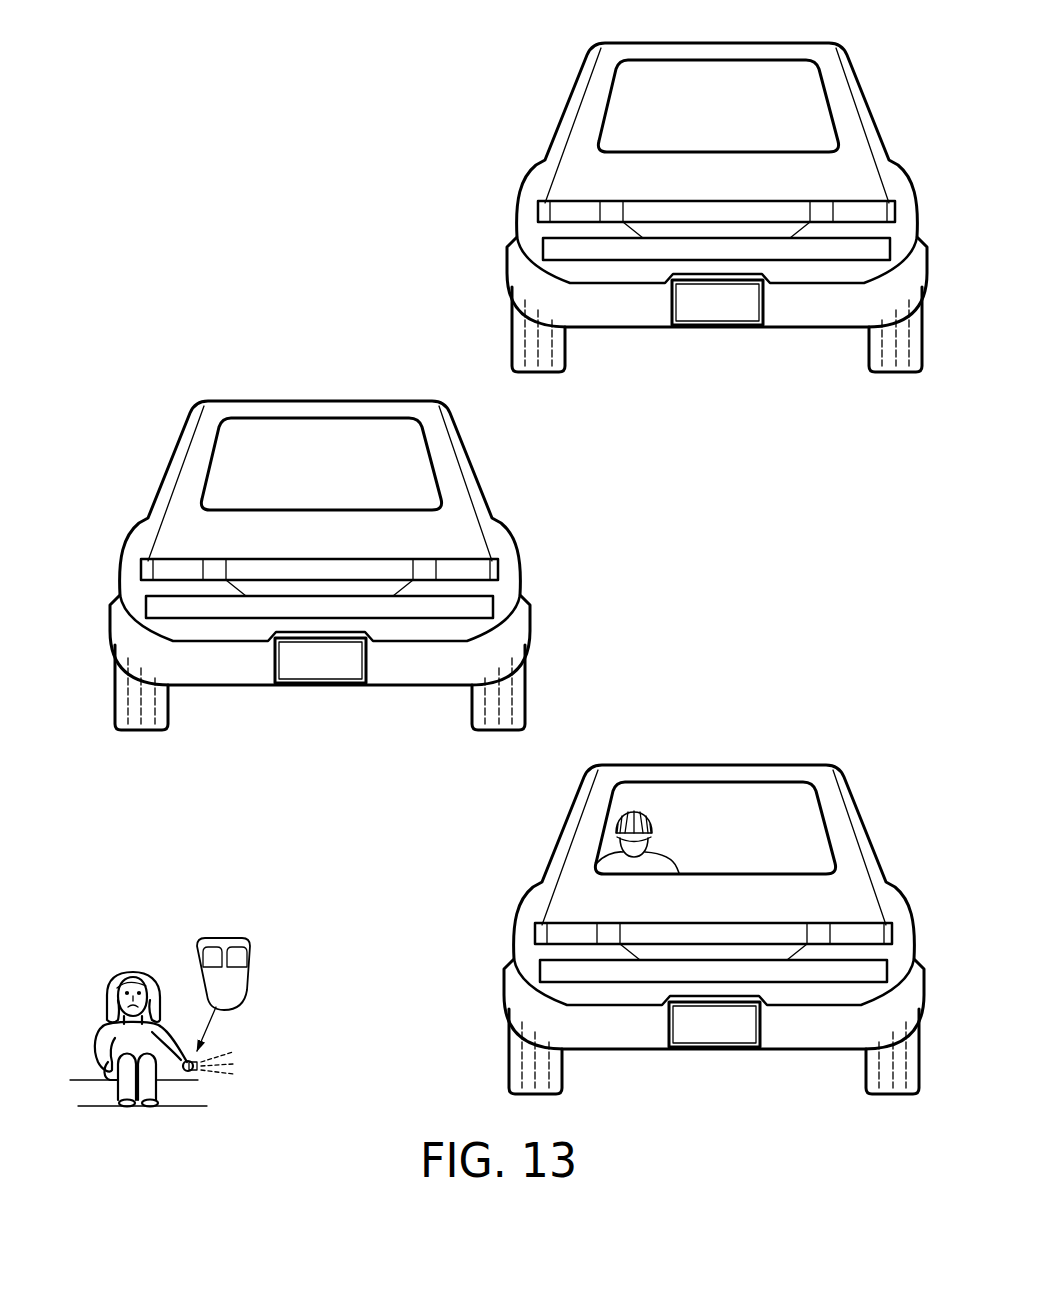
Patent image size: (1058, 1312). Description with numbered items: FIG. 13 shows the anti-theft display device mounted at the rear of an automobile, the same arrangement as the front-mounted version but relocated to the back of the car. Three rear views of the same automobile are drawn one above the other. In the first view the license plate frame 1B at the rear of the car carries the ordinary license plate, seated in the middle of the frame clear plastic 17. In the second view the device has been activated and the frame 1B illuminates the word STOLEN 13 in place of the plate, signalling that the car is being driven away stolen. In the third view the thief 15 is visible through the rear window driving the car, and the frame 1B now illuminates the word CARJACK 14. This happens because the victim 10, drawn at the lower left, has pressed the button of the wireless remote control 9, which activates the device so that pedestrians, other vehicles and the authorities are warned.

The wireless remote control 9 is at (248, 929).
The victim 10 is at (131, 967).
The STOLEN 13 is at (334, 686).
The CARJACK 14 is at (722, 1048).
The thief 15 is at (828, 838).
The frame clear plastic 17 is at (705, 316).
The license plate frame 1B is at (729, 327).